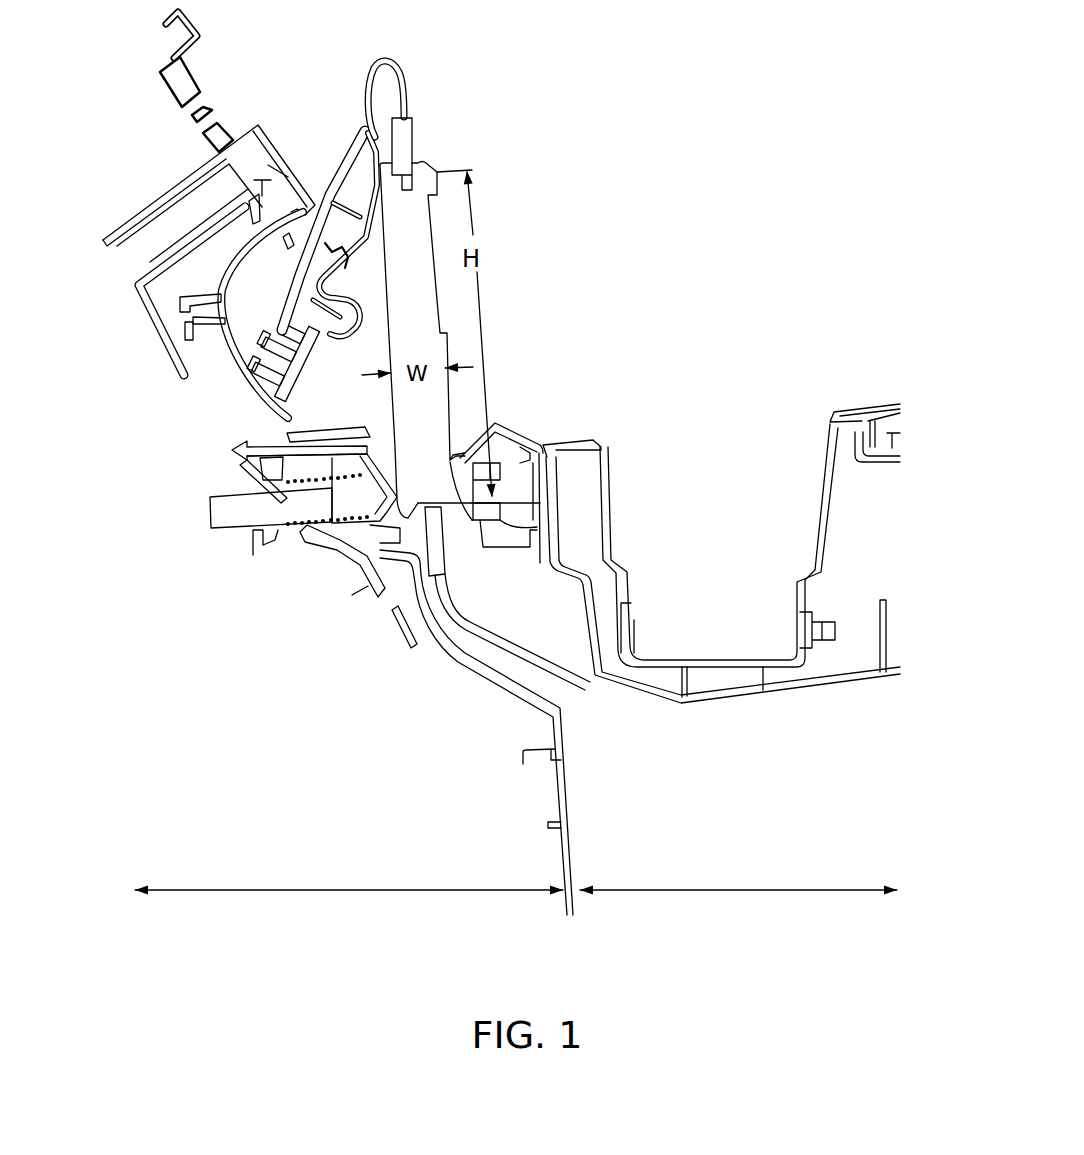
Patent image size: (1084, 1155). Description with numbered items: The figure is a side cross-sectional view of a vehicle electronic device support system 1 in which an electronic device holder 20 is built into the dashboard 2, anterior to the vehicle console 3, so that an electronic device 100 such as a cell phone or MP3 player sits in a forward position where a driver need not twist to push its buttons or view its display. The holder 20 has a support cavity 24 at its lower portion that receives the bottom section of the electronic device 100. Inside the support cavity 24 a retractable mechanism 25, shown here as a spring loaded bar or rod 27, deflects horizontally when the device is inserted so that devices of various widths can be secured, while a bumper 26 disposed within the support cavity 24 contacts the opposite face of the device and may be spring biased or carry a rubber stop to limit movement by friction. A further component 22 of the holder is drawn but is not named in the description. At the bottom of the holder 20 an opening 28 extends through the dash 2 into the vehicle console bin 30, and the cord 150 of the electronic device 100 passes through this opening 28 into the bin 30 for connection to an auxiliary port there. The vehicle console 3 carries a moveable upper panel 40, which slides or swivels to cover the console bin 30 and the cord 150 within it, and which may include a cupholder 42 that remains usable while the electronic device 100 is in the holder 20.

The vehicle electronic device support system 1 is at (694, 206).
The dashboard 2 is at (347, 892).
The vehicle console 3 is at (733, 892).
The electronic device holder 20 is at (303, 148).
The clip arm 22 is at (350, 152).
The support cavity 24 is at (465, 432).
The retractable mechanism 25 is at (378, 450).
The bumper 26 is at (462, 462).
The spring loaded bar or rod 27 is at (297, 532).
The opening 28 is at (462, 538).
The vehicle console bin 30 is at (573, 781).
The moveable upper panel 40 is at (861, 392).
The cupholder 42 is at (625, 603).
The electronic device 100 is at (420, 162).
The cord 150 is at (467, 630).